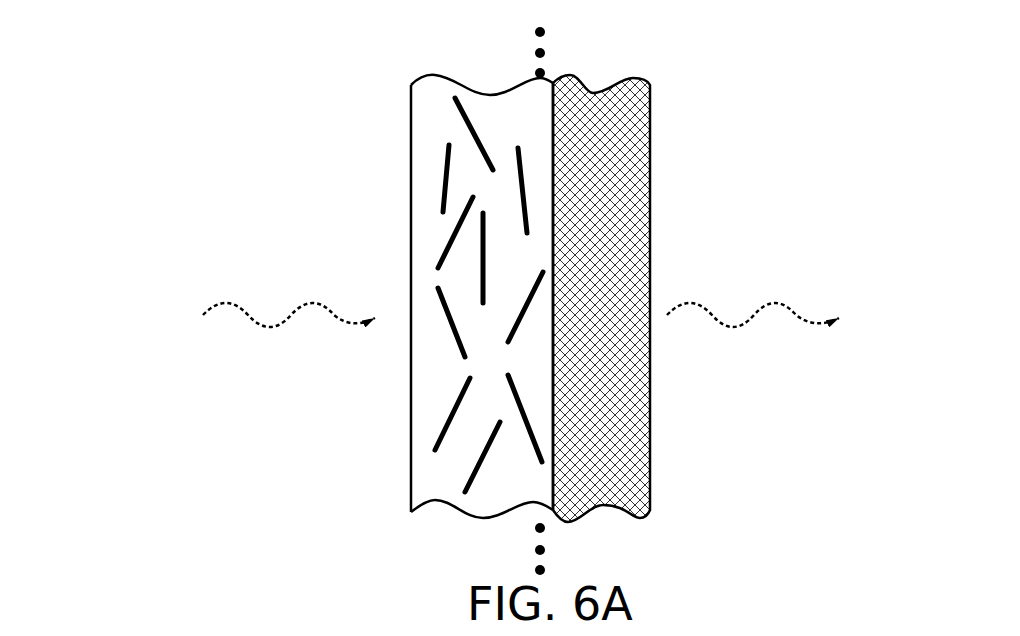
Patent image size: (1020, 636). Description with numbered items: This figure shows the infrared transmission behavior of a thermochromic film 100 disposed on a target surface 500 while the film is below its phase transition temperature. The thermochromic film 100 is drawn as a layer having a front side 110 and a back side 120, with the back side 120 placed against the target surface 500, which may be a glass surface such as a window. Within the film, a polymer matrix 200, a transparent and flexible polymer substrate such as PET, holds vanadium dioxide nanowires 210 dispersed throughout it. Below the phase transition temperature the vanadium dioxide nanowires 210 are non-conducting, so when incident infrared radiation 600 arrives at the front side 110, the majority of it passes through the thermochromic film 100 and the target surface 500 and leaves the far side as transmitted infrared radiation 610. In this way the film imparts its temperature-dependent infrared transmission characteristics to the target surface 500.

The thermochromic film 100 is at (385, 83).
The polymer matrix 200 is at (440, 120).
The vanadium dioxide nanowires 210 is at (440, 312).
The back side 120 is at (557, 112).
The front side 110 is at (412, 475).
The target surface 500 is at (632, 460).
The incident infrared radiation 600 is at (243, 343).
The transmitted infrared radiation 610 is at (795, 343).